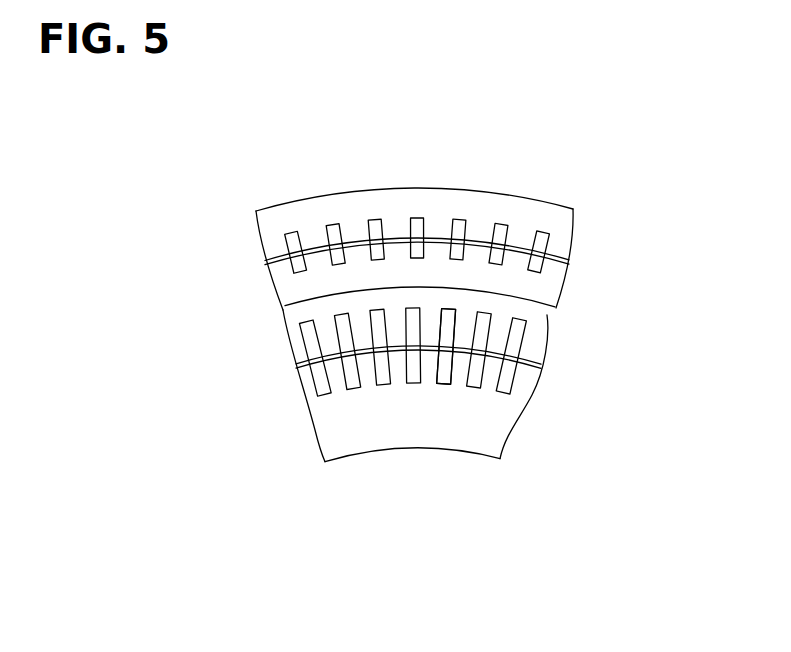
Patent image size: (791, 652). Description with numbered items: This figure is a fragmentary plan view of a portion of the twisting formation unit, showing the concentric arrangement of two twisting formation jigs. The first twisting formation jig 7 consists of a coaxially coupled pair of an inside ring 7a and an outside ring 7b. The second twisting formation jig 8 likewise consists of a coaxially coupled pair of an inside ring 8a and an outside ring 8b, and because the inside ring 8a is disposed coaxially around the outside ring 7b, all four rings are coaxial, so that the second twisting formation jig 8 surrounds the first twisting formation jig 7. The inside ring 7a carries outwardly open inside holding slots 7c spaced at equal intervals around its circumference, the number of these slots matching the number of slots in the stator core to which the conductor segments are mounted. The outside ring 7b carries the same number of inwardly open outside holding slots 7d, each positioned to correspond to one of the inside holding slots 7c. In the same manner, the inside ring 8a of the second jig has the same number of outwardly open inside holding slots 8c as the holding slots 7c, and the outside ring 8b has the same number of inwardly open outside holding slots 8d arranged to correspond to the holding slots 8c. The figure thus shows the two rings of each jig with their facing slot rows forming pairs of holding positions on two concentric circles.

The first twisting formation jig 7 is at (573, 314).
The inside ring 7a is at (370, 435).
The outside ring 7b is at (533, 323).
The inside holding slots 7c is at (440, 380).
The outside holding slots 7d is at (453, 322).
The second twisting formation jig 8 is at (591, 206).
The inside ring 8a is at (320, 283).
The outside ring 8b is at (285, 220).
The inside holding slots 8c is at (455, 245).
The outside holding slots 8d is at (460, 225).